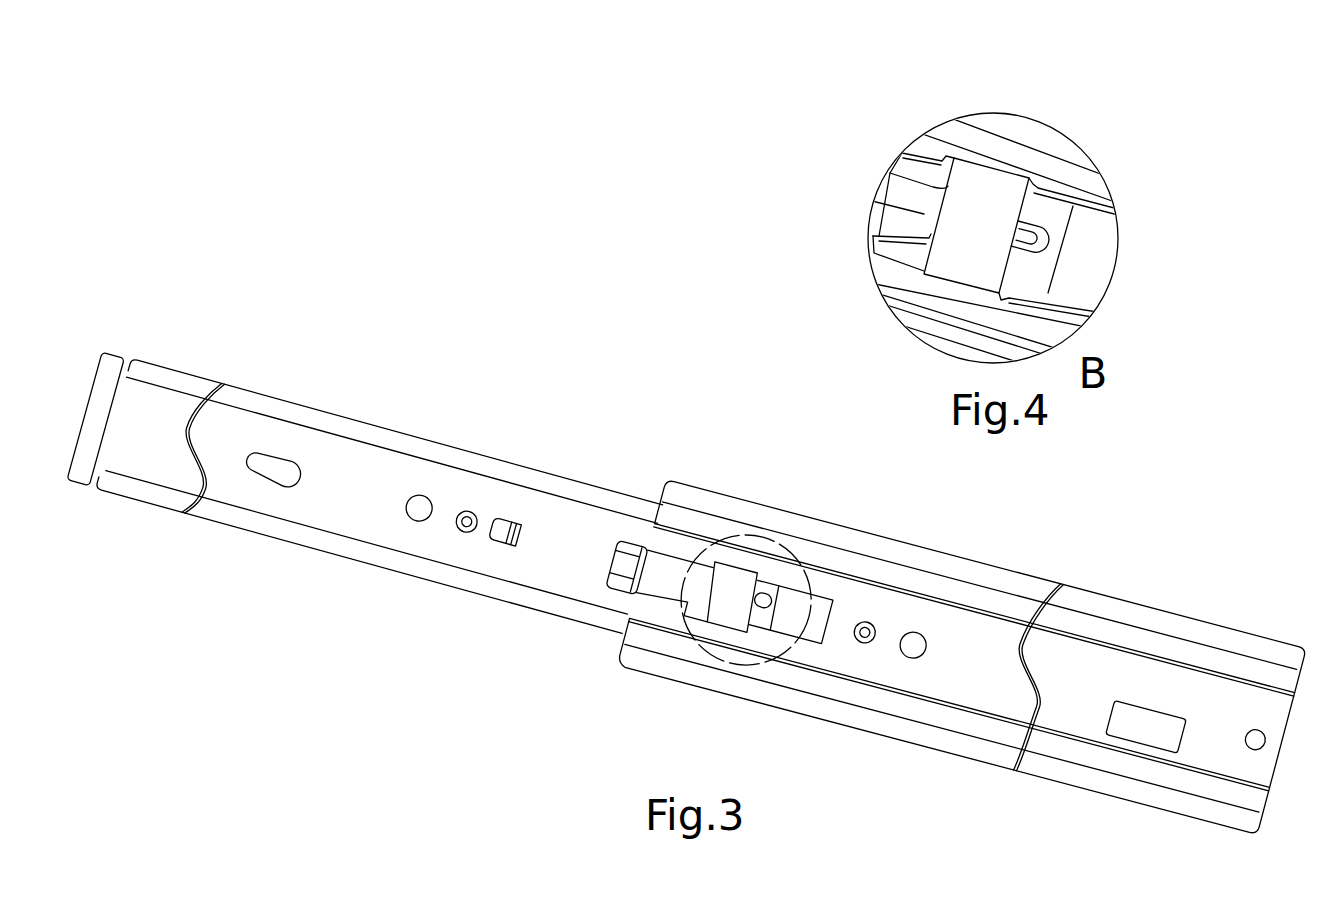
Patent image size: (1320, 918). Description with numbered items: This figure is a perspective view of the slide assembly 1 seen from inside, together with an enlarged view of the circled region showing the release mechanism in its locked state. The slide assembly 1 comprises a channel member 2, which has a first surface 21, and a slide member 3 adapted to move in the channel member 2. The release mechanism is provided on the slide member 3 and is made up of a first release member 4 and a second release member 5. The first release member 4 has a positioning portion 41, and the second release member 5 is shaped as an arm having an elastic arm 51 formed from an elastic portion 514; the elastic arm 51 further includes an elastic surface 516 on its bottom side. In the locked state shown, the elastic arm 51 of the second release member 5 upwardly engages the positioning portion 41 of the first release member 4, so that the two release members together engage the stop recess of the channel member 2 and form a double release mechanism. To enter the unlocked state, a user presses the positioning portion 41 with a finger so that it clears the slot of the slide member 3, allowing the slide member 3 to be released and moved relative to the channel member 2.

In FIG. 3, the slide assembly 1 is at (380, 368).
In FIG. 3, the channel member 2 is at (961, 657).
In FIG. 3, the first surface 21 is at (1200, 715).
In FIG. 3, the slide member 3 is at (335, 555).
In FIG. 4, the slide member 3 is at (930, 148).
In FIG. 3, the first release member 4 is at (817, 615).
In FIG. 4, the positioning portion 41 is at (1040, 267).
In FIG. 3, the second release member 5 is at (662, 577).
In FIG. 4, the elastic arm 51 is at (849, 185).
In FIG. 4, the elastic portion 514 is at (887, 202).
In FIG. 4, the elastic surface 516 is at (992, 188).